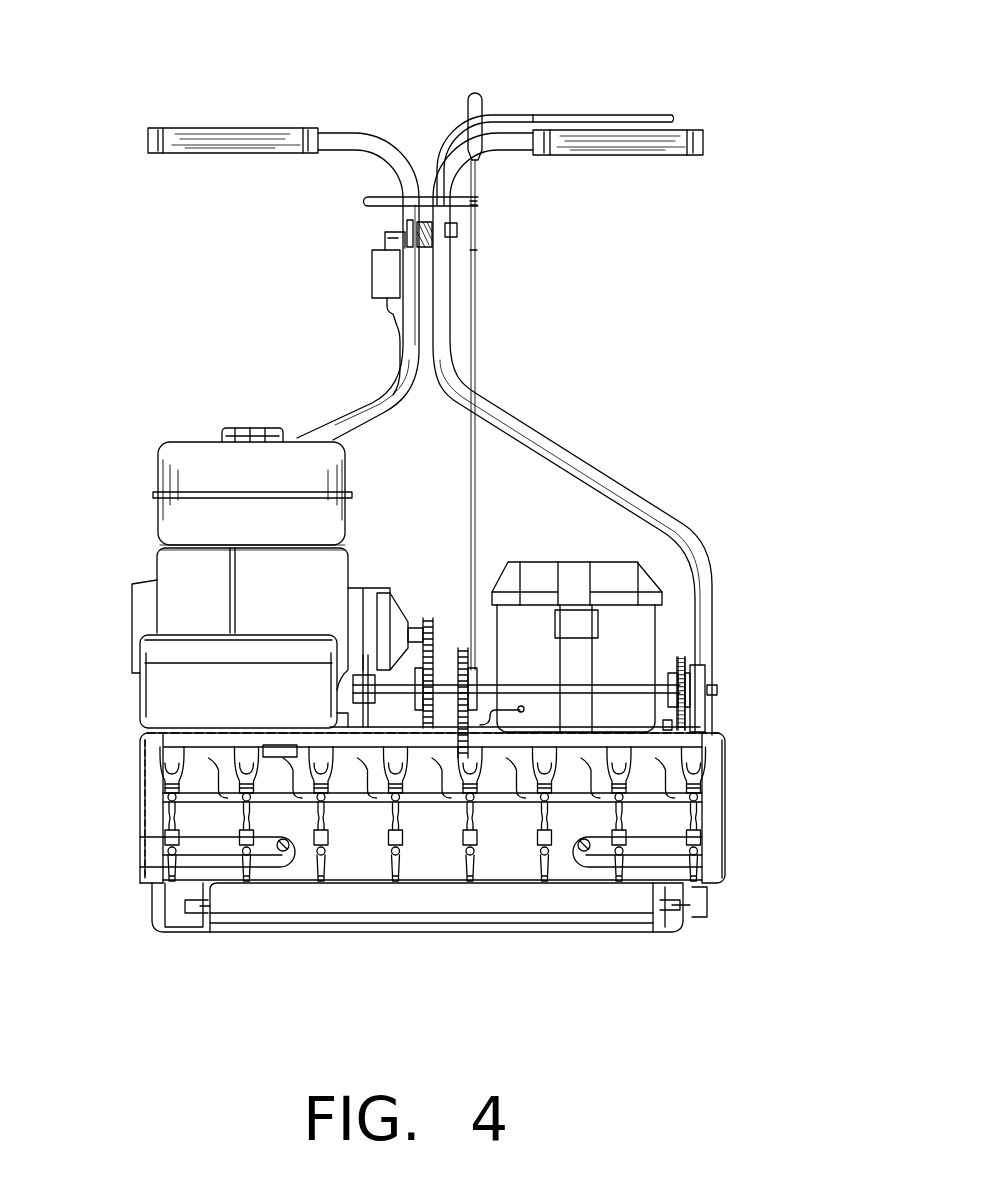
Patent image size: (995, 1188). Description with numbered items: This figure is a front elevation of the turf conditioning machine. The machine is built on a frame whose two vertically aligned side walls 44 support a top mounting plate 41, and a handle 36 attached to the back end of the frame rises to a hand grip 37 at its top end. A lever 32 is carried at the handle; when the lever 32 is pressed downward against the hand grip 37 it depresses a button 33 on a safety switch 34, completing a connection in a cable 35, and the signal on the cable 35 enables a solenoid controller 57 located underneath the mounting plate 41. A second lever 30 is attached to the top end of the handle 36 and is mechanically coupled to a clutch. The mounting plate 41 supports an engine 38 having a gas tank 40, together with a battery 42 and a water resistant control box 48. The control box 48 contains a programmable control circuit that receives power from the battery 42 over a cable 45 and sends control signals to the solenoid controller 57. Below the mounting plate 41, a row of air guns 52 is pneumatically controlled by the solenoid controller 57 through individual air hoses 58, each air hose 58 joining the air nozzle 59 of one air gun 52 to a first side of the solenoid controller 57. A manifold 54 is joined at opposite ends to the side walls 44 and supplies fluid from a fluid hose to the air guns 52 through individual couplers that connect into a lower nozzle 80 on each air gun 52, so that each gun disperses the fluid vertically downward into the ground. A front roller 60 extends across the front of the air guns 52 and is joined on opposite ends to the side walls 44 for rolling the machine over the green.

The lever 30 is at (466, 103).
The lever 32 is at (603, 112).
The button 33 is at (383, 246).
The safety switch 34 is at (372, 278).
The cable 35 is at (388, 322).
The handle 36 is at (570, 448).
The hand grip 37 is at (650, 155).
The engine 38 is at (362, 588).
The gas tank 40 is at (160, 445).
The top mounting plate 41 is at (713, 735).
The battery 42 is at (647, 578).
The side walls 44 is at (140, 767).
The cable 45 is at (494, 688).
The control box 48 is at (155, 693).
The air guns 52 is at (462, 843).
The manifold 54 is at (703, 843).
The solenoid controller 57 is at (291, 750).
The air hoses 58 is at (364, 762).
The air nozzle 59 is at (400, 801).
The front roller 60 is at (587, 928).
The lower nozzle 80 is at (313, 853).